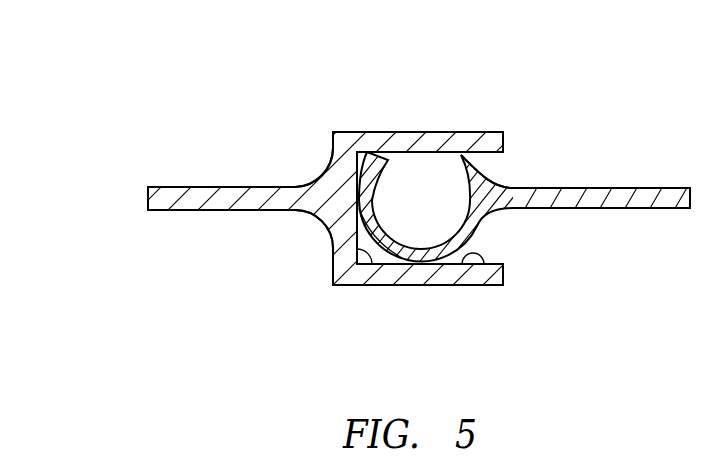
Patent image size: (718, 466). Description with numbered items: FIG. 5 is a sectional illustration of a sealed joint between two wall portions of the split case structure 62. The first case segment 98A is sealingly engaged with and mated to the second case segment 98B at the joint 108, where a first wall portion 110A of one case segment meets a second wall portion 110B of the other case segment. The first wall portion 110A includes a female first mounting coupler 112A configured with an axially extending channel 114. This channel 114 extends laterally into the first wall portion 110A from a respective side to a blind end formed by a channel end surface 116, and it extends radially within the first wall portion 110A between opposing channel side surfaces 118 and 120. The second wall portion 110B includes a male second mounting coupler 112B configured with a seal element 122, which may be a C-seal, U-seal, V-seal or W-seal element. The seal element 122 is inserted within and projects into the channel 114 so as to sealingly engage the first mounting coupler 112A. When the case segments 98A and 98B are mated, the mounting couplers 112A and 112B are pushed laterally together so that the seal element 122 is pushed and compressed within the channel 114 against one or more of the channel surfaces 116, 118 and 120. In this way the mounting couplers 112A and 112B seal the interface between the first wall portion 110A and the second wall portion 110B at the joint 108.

The split case structure 62 is at (537, 96).
The joint 108 is at (421, 108).
The first wall portion 110A is at (237, 211).
The second wall portion 110B is at (637, 187).
The first mounting coupler 112A is at (358, 131).
The second mounting coupler 112B is at (382, 257).
The channel 114 is at (490, 247).
The channel end surface 116 is at (353, 286).
The channel side surface 118 is at (462, 266).
The channel side surface 120 is at (497, 165).
The seal element 122 is at (380, 233).
The first case segment 98A is at (177, 229).
The second case segment 98B is at (644, 226).